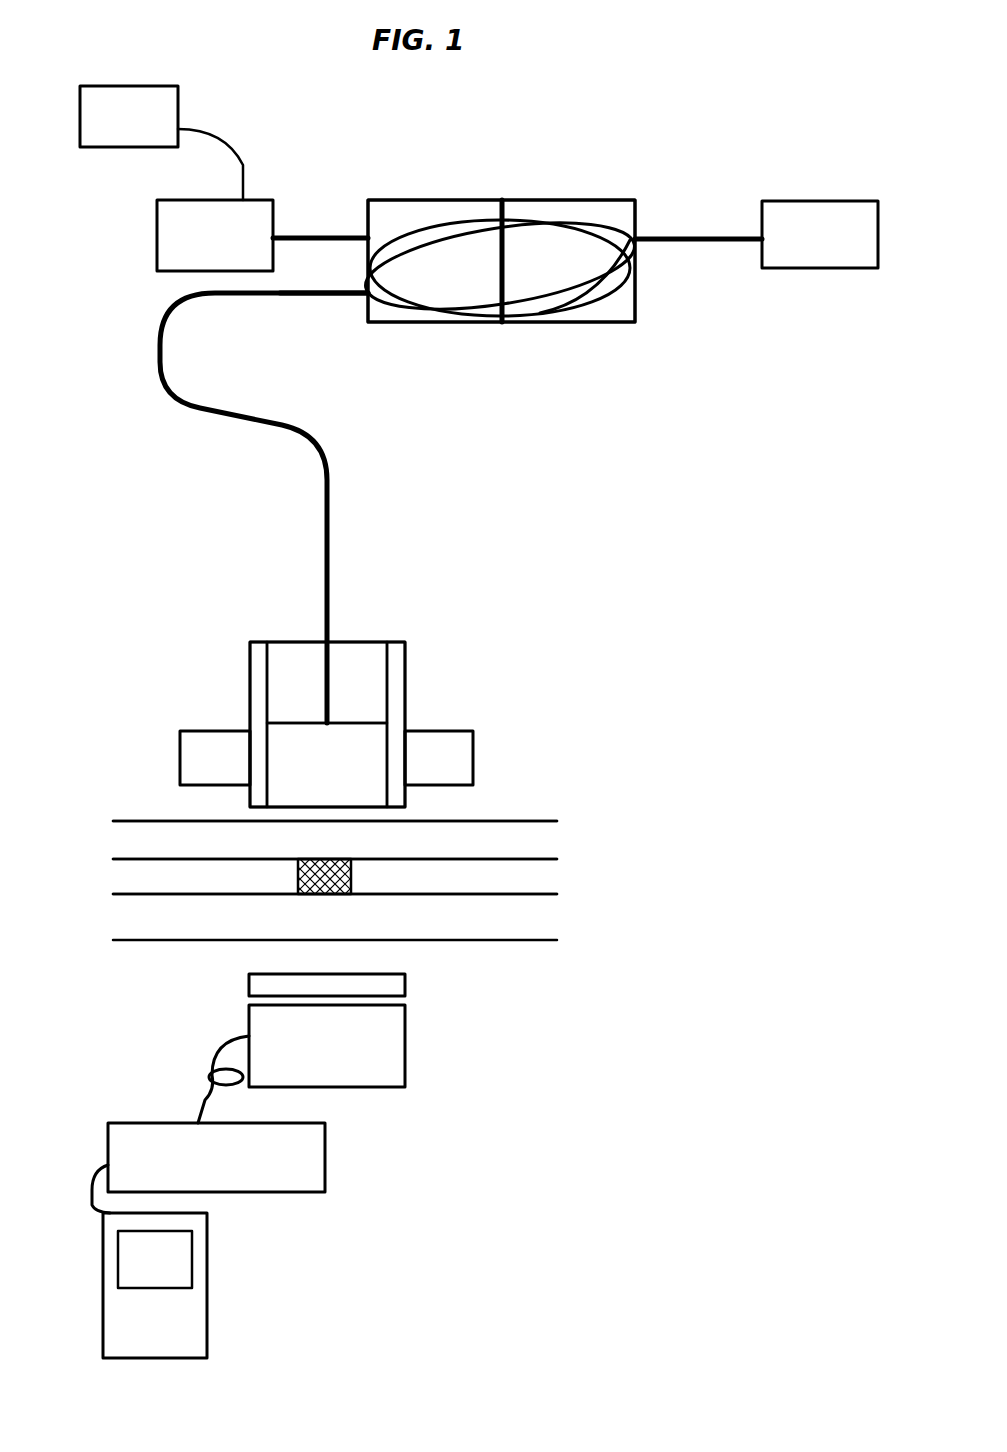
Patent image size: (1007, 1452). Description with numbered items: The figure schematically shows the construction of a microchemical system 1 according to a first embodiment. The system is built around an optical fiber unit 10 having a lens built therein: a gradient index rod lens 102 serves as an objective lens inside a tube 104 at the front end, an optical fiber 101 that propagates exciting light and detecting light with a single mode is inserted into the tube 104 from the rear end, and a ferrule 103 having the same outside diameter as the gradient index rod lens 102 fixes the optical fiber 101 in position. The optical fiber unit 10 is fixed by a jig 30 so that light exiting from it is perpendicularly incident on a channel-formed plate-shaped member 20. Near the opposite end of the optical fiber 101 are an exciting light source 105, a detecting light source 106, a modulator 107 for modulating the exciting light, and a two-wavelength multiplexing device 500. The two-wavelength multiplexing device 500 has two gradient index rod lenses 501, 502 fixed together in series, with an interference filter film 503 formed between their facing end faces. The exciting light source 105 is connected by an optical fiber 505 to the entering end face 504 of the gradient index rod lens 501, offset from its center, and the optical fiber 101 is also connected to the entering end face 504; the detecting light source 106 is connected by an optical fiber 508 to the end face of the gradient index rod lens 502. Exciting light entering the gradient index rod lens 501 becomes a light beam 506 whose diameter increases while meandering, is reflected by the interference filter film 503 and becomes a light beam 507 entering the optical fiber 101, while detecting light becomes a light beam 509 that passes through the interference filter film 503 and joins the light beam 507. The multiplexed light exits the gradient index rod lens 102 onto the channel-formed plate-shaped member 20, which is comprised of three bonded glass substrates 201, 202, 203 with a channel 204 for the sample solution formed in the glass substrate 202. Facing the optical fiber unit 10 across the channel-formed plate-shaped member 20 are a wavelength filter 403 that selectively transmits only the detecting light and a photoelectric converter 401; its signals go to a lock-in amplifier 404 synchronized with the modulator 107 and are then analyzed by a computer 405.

The microchemical system 1 is at (598, 602).
The optical fiber unit 10 is at (415, 650).
The channel-formed plate-shaped member 20 is at (520, 818).
The jig 30 is at (468, 755).
The optical fiber 101 is at (330, 600).
The gradient index rod lens 102 is at (365, 745).
The ferrule 103 is at (302, 672).
The tube 104 is at (255, 702).
The exciting light source 105 is at (162, 241).
The detecting light source 106 is at (838, 253).
The modulator 107 is at (120, 138).
The glass substrate 201 is at (527, 847).
The glass substrate 202 is at (530, 882).
The glass substrate 203 is at (530, 920).
The channel 204 is at (325, 894).
The photoelectric converter 401 is at (395, 1037).
The wavelength filter 403 is at (400, 983).
The lock-in amplifier 404 is at (327, 1158).
The computer 405 is at (210, 1298).
The two-wavelength multiplexing device 500 is at (648, 304).
The gradient index rod lens 501 is at (437, 200).
The gradient index rod lens 502 is at (577, 200).
The interference filter film 503 is at (507, 278).
The entering end face 504 is at (367, 268).
The optical fiber 505 is at (340, 238).
The light beam 506 is at (398, 293).
The light beam 507 is at (392, 305).
The optical fiber 508 is at (718, 236).
The light beam 509 is at (592, 298).